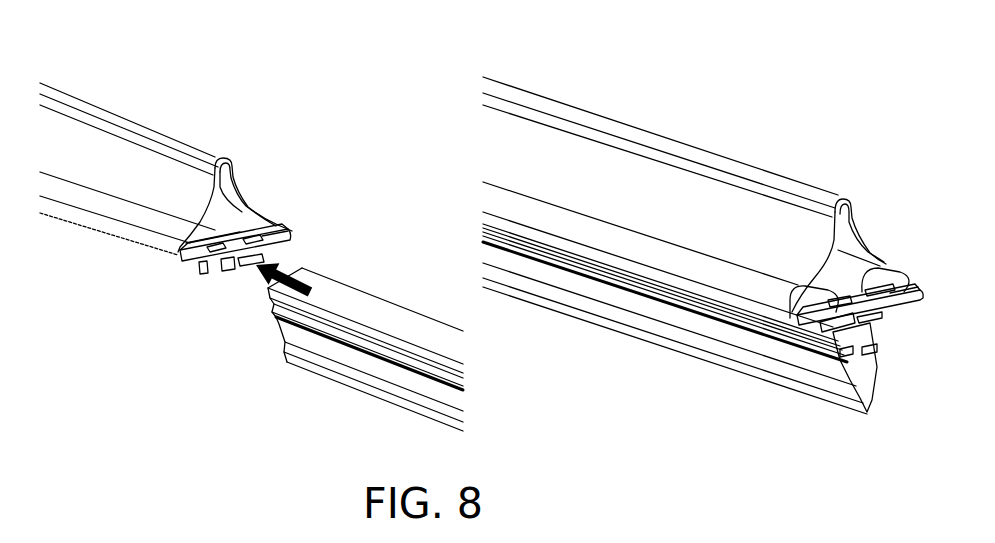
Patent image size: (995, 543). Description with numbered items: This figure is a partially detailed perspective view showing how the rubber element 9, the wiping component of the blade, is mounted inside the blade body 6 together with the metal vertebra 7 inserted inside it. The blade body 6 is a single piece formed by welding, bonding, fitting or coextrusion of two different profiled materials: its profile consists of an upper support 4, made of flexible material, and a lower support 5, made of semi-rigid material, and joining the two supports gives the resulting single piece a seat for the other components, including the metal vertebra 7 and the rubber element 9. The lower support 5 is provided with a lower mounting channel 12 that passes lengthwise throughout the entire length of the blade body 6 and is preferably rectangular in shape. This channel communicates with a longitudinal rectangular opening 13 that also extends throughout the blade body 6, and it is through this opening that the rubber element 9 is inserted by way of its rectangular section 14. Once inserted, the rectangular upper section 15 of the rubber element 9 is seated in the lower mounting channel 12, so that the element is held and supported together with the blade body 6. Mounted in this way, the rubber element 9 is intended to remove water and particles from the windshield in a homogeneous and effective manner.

The upper support 4 is at (168, 253).
The lower support 5 is at (265, 261).
The blade body 6 is at (152, 118).
The metal vertebra 7 is at (276, 233).
The rubber element 9 is at (343, 388).
The lower mounting channel 12 is at (206, 270).
The longitudinal rectangular opening 13 is at (232, 270).
The rectangular section 14 is at (855, 333).
The rectangular upper section 15 is at (386, 330).